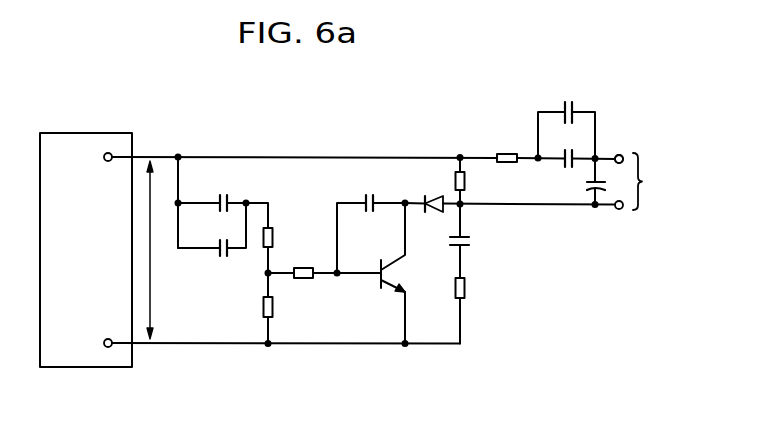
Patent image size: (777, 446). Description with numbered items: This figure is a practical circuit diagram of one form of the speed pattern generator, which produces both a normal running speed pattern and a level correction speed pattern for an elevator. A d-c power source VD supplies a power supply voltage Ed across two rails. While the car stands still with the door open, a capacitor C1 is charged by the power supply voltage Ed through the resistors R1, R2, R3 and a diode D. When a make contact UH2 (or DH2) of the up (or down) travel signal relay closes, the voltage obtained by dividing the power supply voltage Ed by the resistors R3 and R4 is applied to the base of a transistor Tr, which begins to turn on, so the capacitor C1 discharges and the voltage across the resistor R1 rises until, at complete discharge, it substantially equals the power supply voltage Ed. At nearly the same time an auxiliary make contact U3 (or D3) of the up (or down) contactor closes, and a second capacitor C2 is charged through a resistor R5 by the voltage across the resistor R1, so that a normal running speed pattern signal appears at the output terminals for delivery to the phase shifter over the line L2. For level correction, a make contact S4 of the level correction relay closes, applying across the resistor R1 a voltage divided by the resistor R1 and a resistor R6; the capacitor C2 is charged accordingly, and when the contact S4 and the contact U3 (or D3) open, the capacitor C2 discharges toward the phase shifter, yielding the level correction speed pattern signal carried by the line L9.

The d-c power source VD is at (118, 367).
The power supply voltage Ed is at (147, 250).
The make contact of normal running speed up travel signal relay UH2 is at (220, 195).
The make contact of normal running speed down travel signal relay DH2 is at (220, 241).
The resistor R4 is at (274, 238).
The resistor R3 is at (273, 307).
The resistor R2 is at (303, 268).
The capacitor C1 is at (367, 195).
The transistor Tr is at (384, 262).
The diode D is at (435, 195).
The resistor R1 is at (466, 183).
The make contact of level correction speed operation instruction relay S4 is at (471, 241).
The resistor R6 is at (467, 288).
The resistor R5 is at (507, 153).
The auxiliary make contact of up contactor U3 is at (567, 101).
The auxiliary make contact of down contactor D3 is at (572, 147).
The capacitor C2 is at (586, 185).
The line L2 is at (647, 181).
The line L9 is at (660, 176).